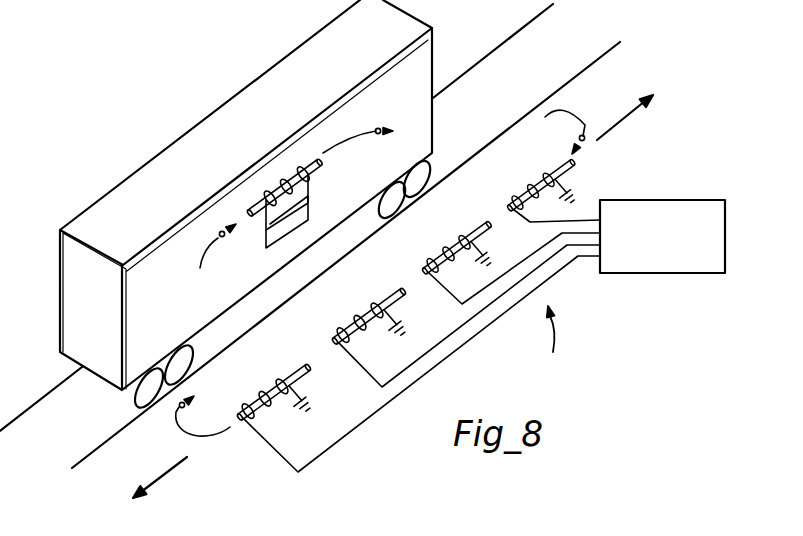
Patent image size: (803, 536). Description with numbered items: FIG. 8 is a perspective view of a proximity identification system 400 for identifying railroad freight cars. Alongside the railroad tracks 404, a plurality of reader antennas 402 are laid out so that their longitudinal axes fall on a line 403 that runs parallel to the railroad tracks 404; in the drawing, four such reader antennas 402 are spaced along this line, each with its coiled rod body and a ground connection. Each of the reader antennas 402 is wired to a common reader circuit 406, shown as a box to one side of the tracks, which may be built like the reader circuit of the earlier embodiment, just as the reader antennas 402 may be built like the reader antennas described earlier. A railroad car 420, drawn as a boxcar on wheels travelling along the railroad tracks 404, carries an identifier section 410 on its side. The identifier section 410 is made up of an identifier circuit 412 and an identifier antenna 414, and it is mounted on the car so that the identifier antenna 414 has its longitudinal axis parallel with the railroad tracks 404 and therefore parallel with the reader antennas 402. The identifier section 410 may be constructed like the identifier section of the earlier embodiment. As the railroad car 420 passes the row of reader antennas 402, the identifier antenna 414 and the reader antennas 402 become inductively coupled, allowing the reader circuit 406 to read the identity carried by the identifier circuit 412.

The proximity identification system 400 is at (538, 347).
The reader antennas 402 is at (299, 367).
The line 403 is at (623, 118).
The railroad tracks 404 is at (485, 60).
The reader circuit 406 is at (667, 201).
The identifier section 410 is at (296, 201).
The identifier circuit 412 is at (308, 201).
The identifier antenna 414 is at (318, 162).
The railroad car 420 is at (147, 164).